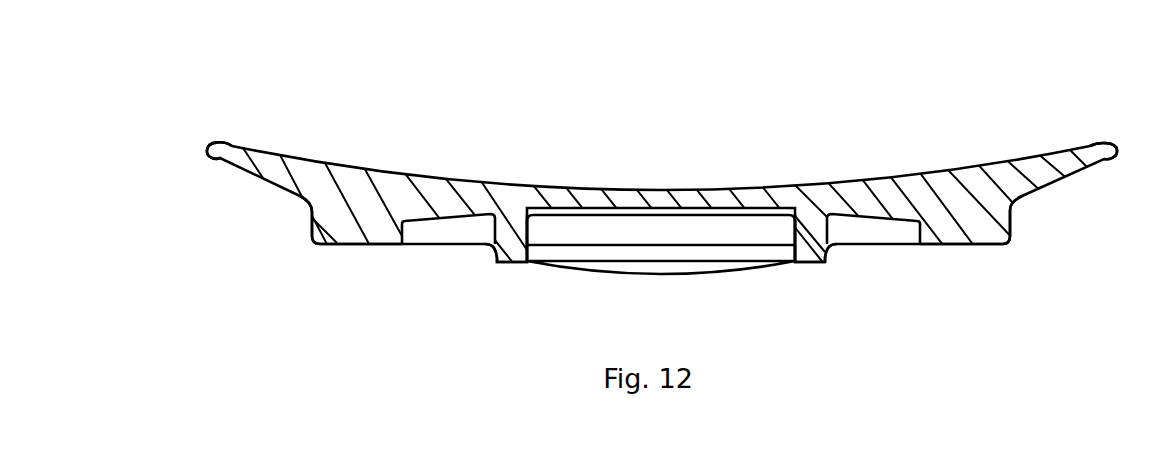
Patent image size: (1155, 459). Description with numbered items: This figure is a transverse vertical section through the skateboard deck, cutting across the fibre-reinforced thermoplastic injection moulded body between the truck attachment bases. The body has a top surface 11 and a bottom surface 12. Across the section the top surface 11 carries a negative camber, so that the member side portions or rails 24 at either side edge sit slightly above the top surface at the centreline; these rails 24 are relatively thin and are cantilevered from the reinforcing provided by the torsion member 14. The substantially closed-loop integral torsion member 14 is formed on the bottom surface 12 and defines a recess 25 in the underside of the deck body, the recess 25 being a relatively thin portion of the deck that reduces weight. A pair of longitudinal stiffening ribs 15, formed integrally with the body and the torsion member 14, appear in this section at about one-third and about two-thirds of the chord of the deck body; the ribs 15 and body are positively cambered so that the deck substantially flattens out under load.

The top surface 11 is at (699, 190).
The member side portions 24 is at (230, 146).
The torsion member 14 is at (356, 235).
The bottom surface 12 is at (433, 235).
The longitudinal stiffening ribs 15 is at (508, 256).
The recess 25 is at (610, 216).